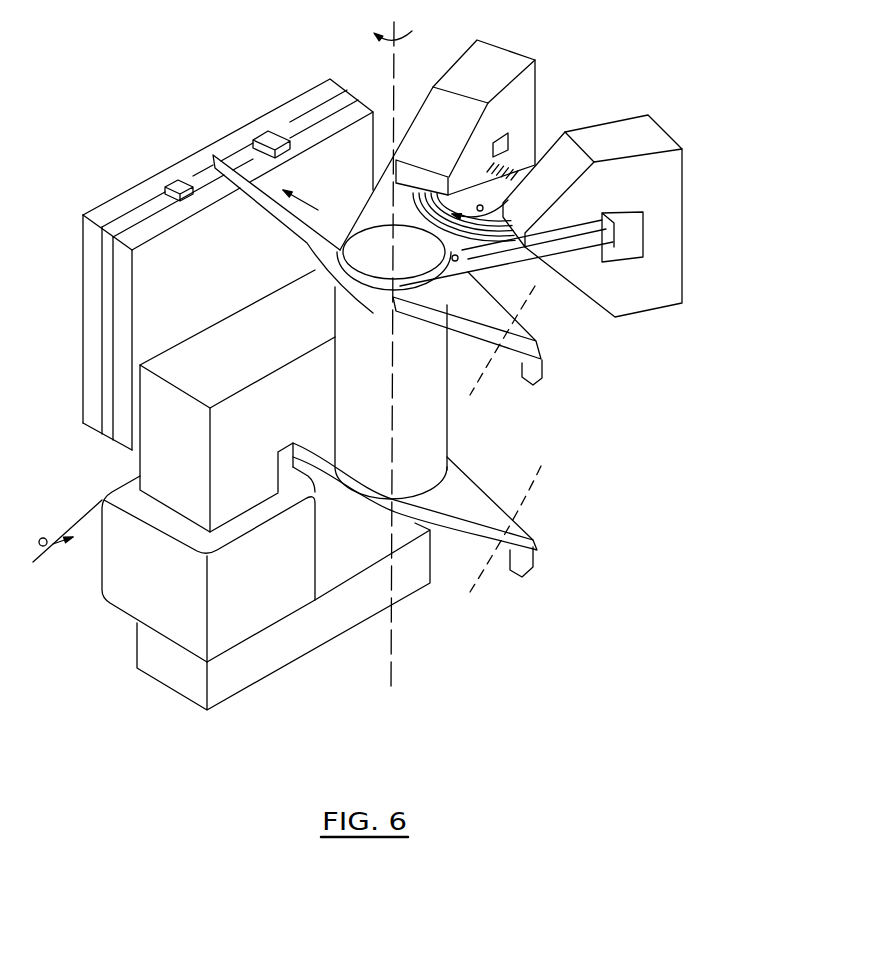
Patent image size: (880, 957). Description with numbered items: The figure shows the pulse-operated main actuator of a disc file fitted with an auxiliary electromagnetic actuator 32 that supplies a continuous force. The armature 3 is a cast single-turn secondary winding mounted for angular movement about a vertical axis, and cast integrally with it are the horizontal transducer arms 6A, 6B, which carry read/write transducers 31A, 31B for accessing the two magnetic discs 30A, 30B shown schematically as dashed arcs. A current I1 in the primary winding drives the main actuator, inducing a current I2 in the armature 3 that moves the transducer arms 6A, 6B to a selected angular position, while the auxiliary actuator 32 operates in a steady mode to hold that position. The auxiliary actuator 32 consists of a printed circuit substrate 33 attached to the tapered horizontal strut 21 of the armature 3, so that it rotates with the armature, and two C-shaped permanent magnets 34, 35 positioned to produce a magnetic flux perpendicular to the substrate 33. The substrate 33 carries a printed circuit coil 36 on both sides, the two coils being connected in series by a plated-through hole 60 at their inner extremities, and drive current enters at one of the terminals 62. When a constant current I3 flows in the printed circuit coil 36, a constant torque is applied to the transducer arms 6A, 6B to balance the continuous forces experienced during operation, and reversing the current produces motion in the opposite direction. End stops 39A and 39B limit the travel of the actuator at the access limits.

The armature 3 is at (303, 248).
The transducer arm 6A is at (530, 340).
The transducer arm 6B is at (517, 537).
The horizontal strut 21 is at (317, 192).
The magnetic disc 30A is at (478, 383).
The magnetic disc 30B is at (480, 567).
The read/write transducer 31A is at (543, 375).
The read/write transducer 31B is at (527, 562).
The auxiliary electromagnetic actuator 32 is at (635, 201).
The printed circuit substrate 33 is at (490, 262).
The C shaped permanent magnet 34 is at (652, 137).
The C shaped permanent magnet 35 is at (505, 58).
The printed circuit coil 36 is at (483, 206).
The end stop 39A is at (262, 130).
The end stop 39B is at (178, 182).
The plated-through hole 60 is at (505, 157).
The terminal 62 is at (455, 262).
The current I1 is at (67, 540).
The current I2 is at (313, 211).
The constant current I3 is at (495, 202).